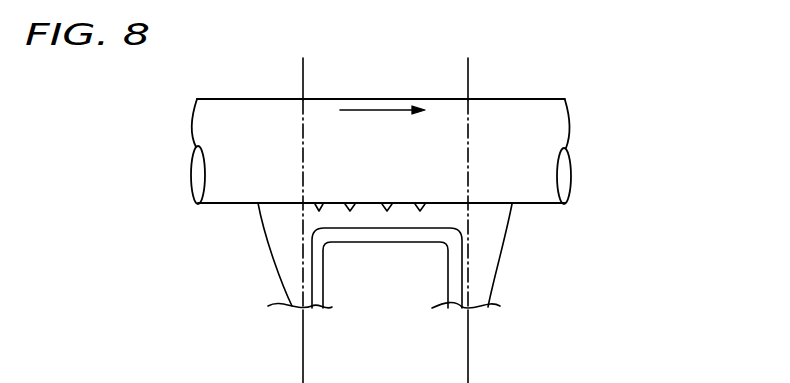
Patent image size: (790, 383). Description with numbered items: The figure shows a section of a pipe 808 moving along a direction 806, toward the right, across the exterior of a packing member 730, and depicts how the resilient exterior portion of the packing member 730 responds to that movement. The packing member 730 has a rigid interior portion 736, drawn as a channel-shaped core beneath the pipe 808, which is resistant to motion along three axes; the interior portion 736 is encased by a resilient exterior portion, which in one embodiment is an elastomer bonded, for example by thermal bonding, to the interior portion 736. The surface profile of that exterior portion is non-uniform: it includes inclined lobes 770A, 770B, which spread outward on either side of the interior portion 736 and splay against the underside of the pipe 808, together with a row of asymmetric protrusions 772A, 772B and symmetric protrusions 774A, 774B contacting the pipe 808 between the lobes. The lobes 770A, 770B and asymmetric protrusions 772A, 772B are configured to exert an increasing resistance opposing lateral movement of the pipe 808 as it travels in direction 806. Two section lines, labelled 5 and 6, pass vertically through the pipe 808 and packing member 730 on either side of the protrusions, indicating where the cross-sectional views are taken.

The packing member 730 is at (437, 181).
The pipe 808 is at (228, 108).
The direction 806 is at (376, 106).
The asymmetric protrusion 772A is at (337, 215).
The asymmetric protrusion 772B is at (439, 216).
The symmetric protrusion 774A is at (369, 216).
The symmetric protrusion 774B is at (400, 215).
The inclined lobe 770A is at (281, 236).
The inclined lobe 770B is at (485, 250).
The interior portion 736 is at (380, 236).
The section line 5 is at (303, 66).
The section line 6 is at (468, 66).